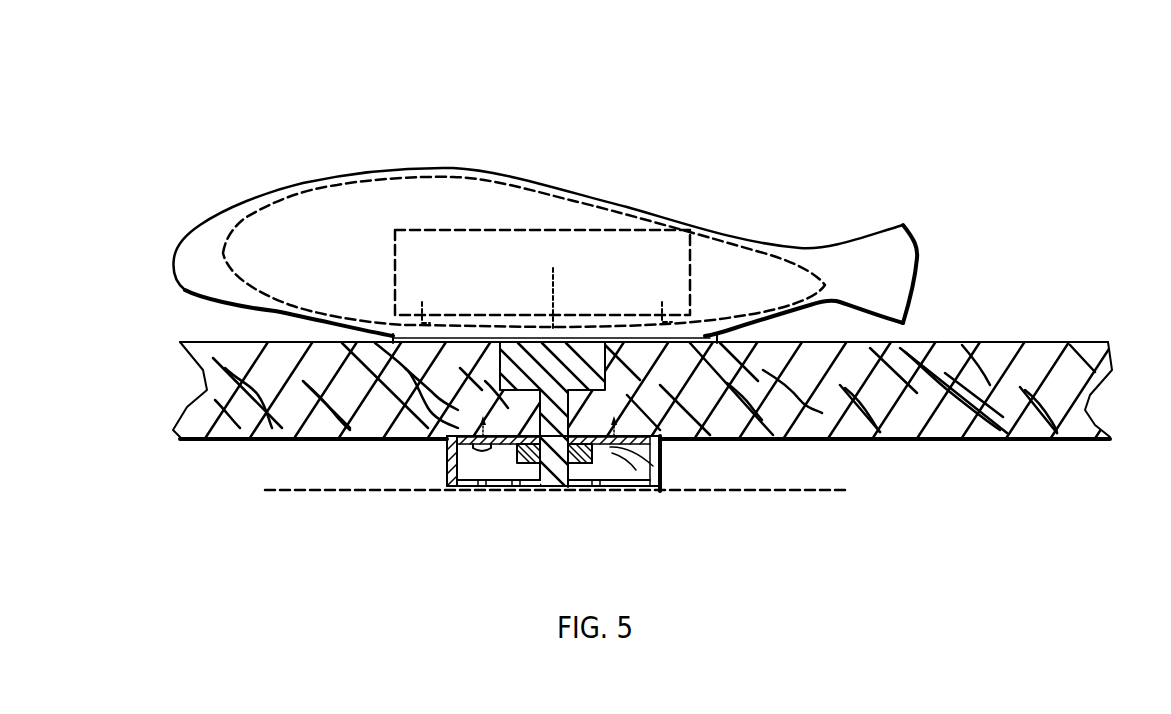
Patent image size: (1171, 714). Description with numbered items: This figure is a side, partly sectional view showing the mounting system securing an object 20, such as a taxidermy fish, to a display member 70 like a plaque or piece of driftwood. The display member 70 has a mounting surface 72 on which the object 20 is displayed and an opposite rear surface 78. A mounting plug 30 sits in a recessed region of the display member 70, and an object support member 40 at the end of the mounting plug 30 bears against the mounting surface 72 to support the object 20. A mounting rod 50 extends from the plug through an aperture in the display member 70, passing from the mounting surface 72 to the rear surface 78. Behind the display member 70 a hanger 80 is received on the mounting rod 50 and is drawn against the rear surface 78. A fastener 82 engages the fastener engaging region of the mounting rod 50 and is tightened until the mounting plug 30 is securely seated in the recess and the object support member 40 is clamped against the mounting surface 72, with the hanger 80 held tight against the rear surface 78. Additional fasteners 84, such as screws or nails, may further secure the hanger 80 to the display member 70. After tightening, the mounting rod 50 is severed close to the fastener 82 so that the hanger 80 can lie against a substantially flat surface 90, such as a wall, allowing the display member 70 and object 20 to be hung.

The object 20 is at (268, 128).
The mounting plug 30 is at (520, 366).
The object support member 40 is at (698, 343).
The mounting rod 50 is at (540, 475).
The display member 70 is at (665, 386).
The mounting surface 72 is at (1021, 344).
The rear surface 78 is at (880, 441).
The hanger 80 is at (614, 498).
The fastener 82 is at (592, 463).
The additional fasteners 84 is at (662, 467).
The substantially flat surface 90 is at (287, 492).